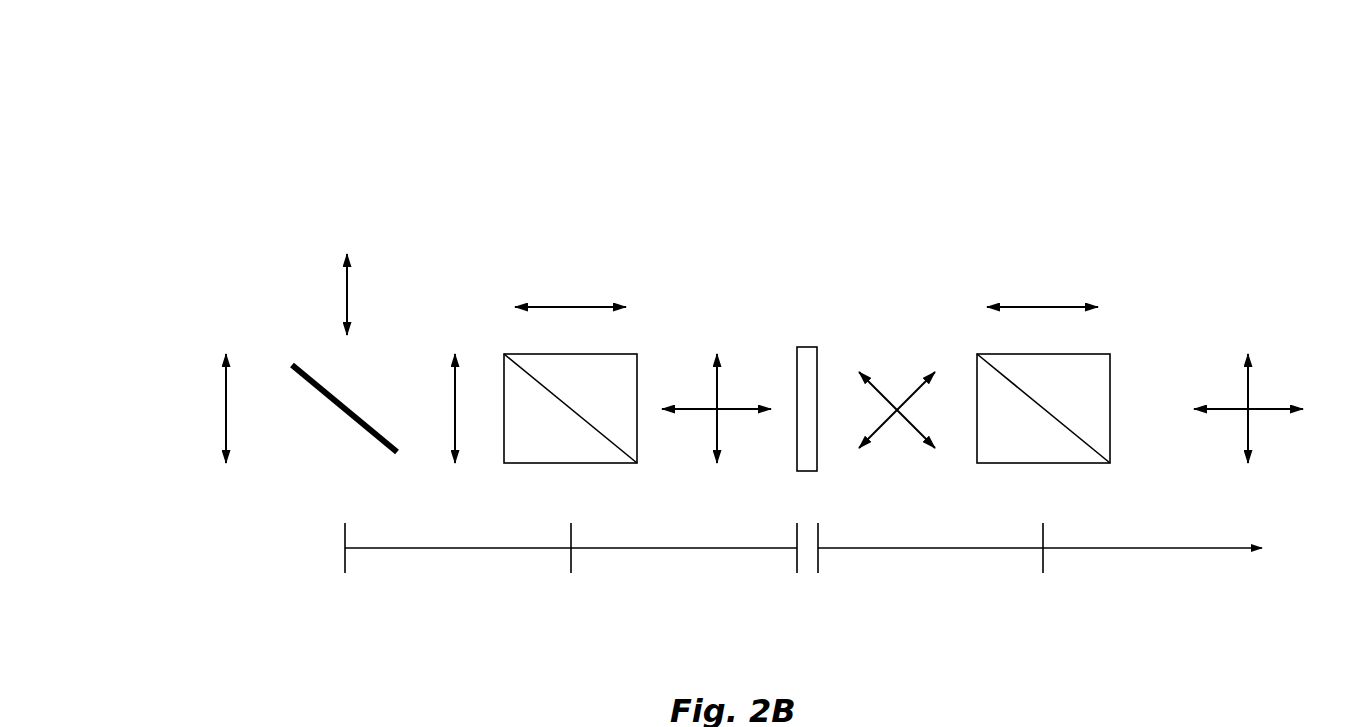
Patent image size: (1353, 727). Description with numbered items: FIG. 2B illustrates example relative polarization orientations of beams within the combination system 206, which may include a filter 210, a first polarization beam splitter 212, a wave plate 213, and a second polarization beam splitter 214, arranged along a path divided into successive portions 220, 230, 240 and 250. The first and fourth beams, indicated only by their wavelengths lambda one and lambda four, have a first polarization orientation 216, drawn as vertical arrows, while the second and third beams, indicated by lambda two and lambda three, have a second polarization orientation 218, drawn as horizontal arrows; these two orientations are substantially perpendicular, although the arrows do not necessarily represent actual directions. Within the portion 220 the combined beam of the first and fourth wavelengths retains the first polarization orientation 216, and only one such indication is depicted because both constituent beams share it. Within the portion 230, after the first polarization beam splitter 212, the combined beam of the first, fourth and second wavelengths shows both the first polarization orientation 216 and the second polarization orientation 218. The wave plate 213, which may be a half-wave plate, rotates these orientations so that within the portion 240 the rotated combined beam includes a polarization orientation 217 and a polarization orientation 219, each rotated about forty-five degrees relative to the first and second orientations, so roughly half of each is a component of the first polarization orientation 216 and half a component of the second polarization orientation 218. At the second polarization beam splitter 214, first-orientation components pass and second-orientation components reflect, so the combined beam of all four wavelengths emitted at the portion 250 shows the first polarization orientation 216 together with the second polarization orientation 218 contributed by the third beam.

The combination system 206 is at (203, 118).
The filter 210 is at (359, 432).
The first polarization beam splitter 212 is at (518, 466).
The wave plate 213 is at (810, 342).
The second polarization beam splitter 214 is at (1048, 468).
The first polarization orientation 216 is at (335, 272).
The polarization orientation 217 is at (913, 432).
The second polarization orientation 218 is at (540, 292).
The polarization orientation 219 is at (880, 432).
The portion 220 is at (452, 560).
The portion 230 is at (722, 560).
The portion 240 is at (908, 560).
The portion 250 is at (1223, 560).